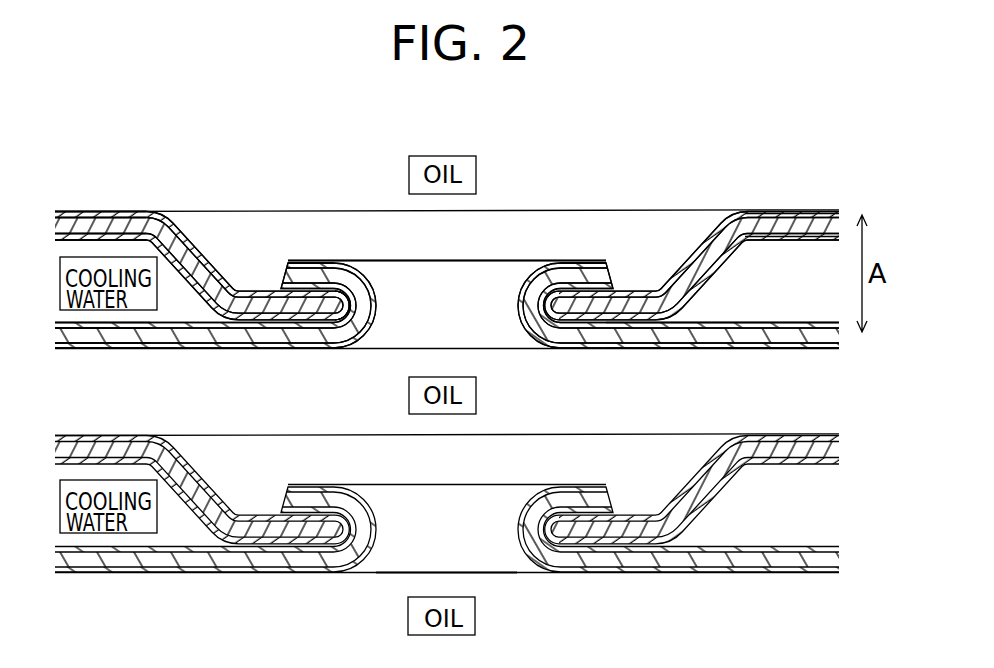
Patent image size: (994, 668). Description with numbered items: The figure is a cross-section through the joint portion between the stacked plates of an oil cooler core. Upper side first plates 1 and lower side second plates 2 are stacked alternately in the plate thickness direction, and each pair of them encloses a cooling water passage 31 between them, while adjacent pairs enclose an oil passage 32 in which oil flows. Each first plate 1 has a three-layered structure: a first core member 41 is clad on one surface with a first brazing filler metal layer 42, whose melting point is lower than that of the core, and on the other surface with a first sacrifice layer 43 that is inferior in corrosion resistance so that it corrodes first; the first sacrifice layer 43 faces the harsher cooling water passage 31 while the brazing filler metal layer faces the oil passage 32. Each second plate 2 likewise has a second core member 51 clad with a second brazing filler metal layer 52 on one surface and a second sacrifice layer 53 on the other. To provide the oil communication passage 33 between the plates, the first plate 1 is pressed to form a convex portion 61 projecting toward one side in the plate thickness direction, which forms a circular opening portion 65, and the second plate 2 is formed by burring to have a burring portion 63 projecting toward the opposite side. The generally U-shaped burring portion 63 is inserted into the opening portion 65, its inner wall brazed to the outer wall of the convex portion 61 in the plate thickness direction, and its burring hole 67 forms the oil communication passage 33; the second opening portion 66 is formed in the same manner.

The first plate 1 is at (804, 193).
The second plate 2 is at (806, 303).
The cooling water passage 31 is at (755, 302).
The oil passage 32 is at (772, 191).
The oil communication passage 33 is at (517, 227).
The first core member 41 is at (80, 216).
The first brazing filler metal layer 42 is at (113, 214).
The first sacrifice layer 43 is at (152, 216).
The second core member 51 is at (80, 346).
The second brazing filler metal layer 52 is at (113, 350).
The second sacrifice layer 53 is at (165, 336).
The convex portion 61 is at (628, 300).
The burring portion 63 is at (300, 258).
The circular opening portion 65 is at (340, 293).
The circular opening portion 66 is at (342, 305).
The burring hole 67 is at (495, 545).